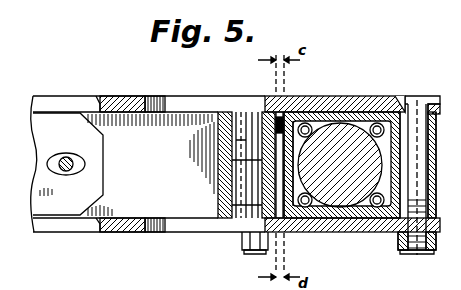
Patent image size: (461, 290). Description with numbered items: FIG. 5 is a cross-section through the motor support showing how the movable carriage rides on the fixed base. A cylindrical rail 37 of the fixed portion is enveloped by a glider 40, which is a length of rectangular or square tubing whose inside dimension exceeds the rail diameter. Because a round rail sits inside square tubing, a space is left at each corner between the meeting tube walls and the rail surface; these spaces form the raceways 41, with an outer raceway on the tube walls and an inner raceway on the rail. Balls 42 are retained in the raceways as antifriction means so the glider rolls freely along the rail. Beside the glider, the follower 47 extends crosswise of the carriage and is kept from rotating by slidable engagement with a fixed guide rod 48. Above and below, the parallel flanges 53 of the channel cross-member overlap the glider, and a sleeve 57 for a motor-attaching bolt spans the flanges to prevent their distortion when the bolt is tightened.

The rail 37 is at (331, 214).
The glider 40 is at (350, 111).
The raceway 41 is at (386, 111).
The ball 42 is at (364, 194).
The yoke or follower 47 is at (103, 171).
The guide rod 48 is at (66, 156).
The flange 53 is at (123, 96).
The sleeve 57 is at (213, 152).